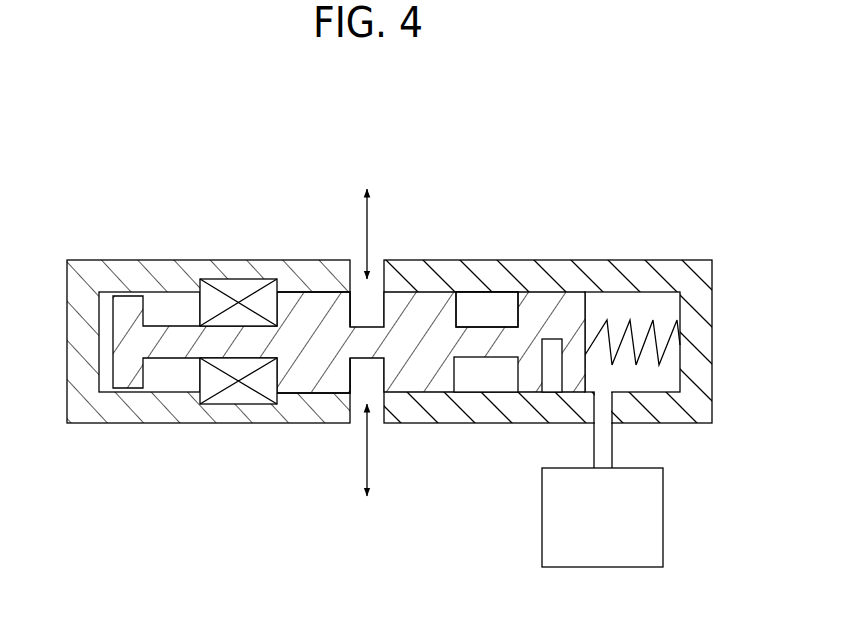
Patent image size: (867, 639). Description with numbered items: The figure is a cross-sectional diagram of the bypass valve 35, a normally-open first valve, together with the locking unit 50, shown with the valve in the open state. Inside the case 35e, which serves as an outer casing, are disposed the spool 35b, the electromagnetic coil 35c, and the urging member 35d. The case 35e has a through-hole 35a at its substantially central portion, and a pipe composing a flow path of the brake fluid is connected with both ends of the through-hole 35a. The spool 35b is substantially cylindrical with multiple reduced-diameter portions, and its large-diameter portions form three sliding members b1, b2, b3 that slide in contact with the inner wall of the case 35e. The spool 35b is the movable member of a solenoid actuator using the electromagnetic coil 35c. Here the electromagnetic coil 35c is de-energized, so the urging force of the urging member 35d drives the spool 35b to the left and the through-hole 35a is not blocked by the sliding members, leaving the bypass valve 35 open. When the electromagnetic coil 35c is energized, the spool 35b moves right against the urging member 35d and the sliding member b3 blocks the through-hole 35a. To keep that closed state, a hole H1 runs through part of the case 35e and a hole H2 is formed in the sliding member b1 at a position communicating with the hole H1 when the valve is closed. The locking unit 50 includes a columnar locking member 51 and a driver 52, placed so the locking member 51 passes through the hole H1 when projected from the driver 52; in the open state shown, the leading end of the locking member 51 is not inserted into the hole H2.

The bypass valve 35 is at (367, 310).
The through-hole 35a is at (355, 259).
The spool 35b is at (484, 320).
The electromagnetic coil 35c is at (223, 282).
The urging member 35d is at (664, 292).
The case 35e is at (90, 415).
The sliding member b1 is at (553, 292).
The sliding member b2 is at (456, 292).
The sliding member b3 is at (302, 292).
The hole H1 is at (605, 391).
The hole H2 is at (552, 380).
The locking unit 50 is at (686, 479).
The locking member 51 is at (602, 442).
The driver 52 is at (648, 515).